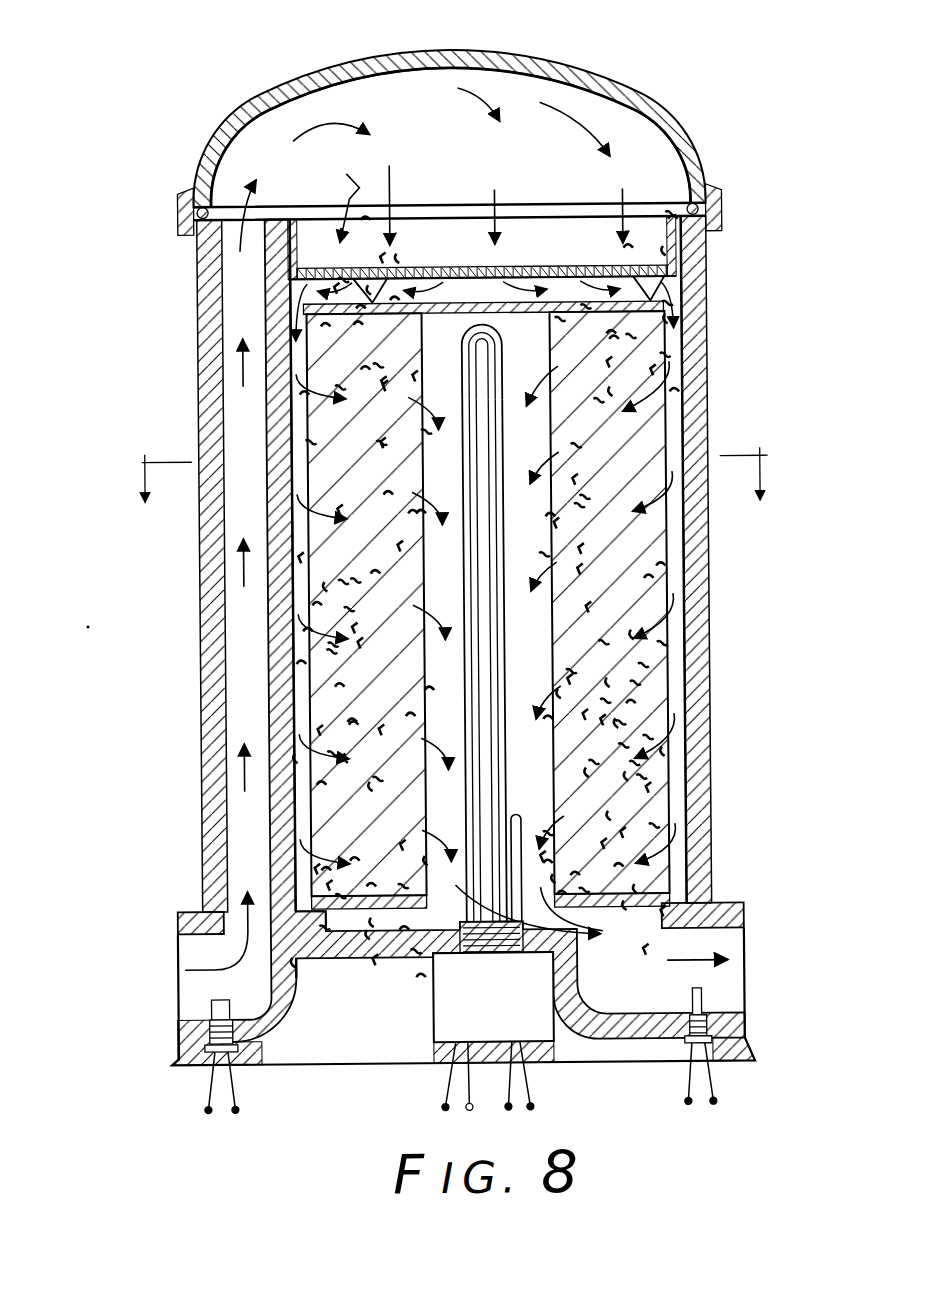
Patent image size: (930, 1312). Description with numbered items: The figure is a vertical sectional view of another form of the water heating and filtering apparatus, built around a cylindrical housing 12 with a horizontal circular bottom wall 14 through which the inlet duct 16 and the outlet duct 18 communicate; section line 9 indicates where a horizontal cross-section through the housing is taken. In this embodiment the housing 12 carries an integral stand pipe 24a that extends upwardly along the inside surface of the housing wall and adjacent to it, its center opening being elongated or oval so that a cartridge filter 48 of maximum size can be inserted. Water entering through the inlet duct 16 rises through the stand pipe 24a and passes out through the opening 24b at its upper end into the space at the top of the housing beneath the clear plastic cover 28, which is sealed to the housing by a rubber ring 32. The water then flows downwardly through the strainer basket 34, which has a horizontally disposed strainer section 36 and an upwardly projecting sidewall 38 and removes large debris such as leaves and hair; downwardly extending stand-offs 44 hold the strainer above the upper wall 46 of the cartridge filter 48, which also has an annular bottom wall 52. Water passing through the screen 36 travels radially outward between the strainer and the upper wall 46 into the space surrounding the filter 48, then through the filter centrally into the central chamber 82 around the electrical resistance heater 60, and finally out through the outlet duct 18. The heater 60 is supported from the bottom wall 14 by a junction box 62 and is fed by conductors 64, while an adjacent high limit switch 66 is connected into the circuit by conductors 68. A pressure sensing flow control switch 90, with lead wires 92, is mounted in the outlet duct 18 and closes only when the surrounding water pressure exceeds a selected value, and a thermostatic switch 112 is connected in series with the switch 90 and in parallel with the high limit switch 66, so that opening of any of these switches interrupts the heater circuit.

The clear plastic cover 28 is at (450, 48).
The opening 24b is at (216, 150).
The rubber ring 32 is at (200, 210).
The sidewall 38 is at (296, 220).
The strainer basket 34 is at (467, 204).
The stand-offs 44 is at (381, 296).
The strainer section 36 is at (515, 266).
The upper wall 46 is at (508, 317).
The housing 12 is at (700, 388).
The section line 9 is at (456, 475).
The cartridge filter 48 is at (484, 594).
The center opening 82 is at (505, 651).
The electrical resistance heater 60 is at (496, 678).
The high limit switch 66 is at (518, 824).
The stand pipe 24a is at (244, 688).
The inlet duct 16 is at (187, 947).
The thermostatic switch 112 is at (208, 1002).
The annular bottom wall 52 is at (387, 902).
The bottom wall 14 is at (344, 947).
The junction box 62 is at (493, 997).
The outlet duct 18 is at (727, 940).
The pressure sensing flow control switch 90 is at (702, 1000).
The lead wires 92 is at (228, 1100).
The conductors 64 is at (446, 1097).
The conductors 68 is at (526, 1098).